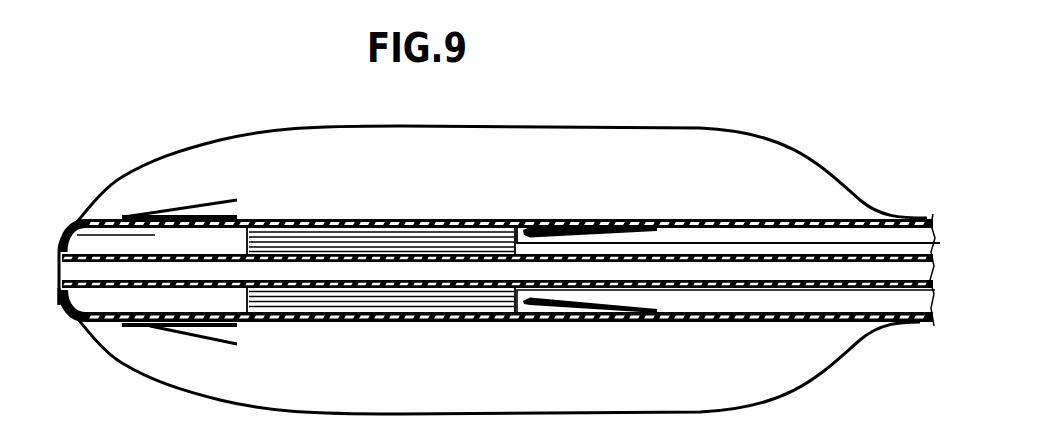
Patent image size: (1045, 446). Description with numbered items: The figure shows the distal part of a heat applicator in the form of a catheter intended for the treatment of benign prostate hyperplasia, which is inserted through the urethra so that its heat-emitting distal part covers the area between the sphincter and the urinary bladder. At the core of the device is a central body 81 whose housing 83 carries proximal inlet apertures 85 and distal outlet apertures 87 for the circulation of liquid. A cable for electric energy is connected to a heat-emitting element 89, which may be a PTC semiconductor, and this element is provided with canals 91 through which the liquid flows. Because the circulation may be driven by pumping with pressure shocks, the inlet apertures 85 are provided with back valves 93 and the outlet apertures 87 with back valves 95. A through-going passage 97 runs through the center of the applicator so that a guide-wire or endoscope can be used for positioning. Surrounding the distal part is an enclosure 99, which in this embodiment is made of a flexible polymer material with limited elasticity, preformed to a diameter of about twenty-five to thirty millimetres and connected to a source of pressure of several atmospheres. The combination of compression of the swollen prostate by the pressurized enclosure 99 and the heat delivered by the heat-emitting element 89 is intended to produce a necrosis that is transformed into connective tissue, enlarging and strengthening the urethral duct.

The central body 81 is at (573, 226).
The housing 83 is at (464, 217).
The proximal inlet apertures 85 is at (558, 218).
The distal outlet apertures 87 is at (226, 217).
The heat-emitting element 89 is at (386, 240).
The canals 91 is at (394, 321).
The back valves 93 is at (578, 219).
The back valves 95 is at (203, 211).
The through-going passage 97 is at (300, 270).
The enclosure 99 is at (154, 167).